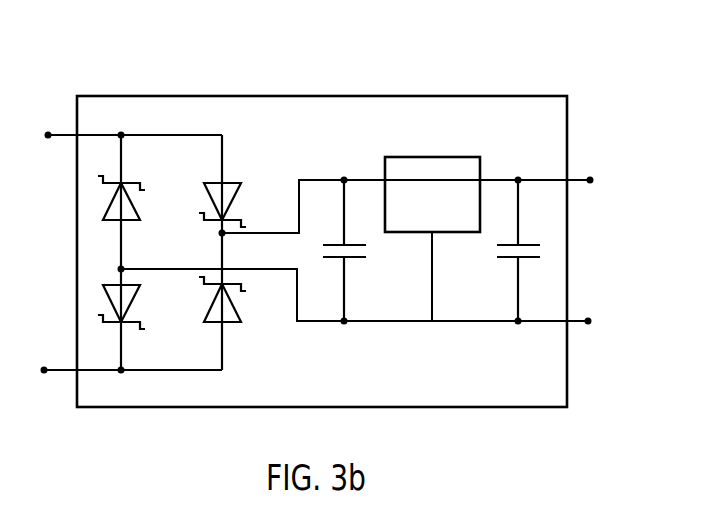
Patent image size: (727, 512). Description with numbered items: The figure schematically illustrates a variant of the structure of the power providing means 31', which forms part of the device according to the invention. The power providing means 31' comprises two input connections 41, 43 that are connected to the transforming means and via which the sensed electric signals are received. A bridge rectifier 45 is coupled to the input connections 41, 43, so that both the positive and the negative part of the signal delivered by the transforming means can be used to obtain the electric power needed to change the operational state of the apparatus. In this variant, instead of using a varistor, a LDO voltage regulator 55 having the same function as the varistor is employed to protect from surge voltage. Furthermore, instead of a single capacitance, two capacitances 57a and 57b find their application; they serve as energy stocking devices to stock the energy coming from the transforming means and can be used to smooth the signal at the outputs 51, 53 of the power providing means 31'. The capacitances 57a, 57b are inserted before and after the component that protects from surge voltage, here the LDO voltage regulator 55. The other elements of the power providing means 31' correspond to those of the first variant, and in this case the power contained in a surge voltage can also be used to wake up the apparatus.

The power providing means 31' is at (322, 228).
The input connection 41 is at (48, 132).
The input connection 43 is at (44, 374).
The bridge rectifier 45 is at (171, 124).
The output 51 is at (591, 177).
The output 53 is at (588, 325).
The LDO voltage regulator 55 is at (400, 156).
The capacitance 57a is at (332, 243).
The capacitance 57b is at (508, 243).